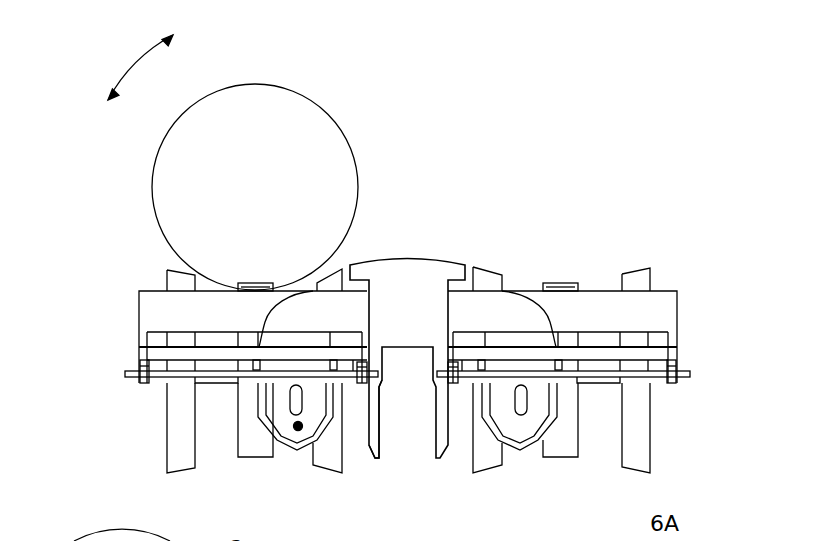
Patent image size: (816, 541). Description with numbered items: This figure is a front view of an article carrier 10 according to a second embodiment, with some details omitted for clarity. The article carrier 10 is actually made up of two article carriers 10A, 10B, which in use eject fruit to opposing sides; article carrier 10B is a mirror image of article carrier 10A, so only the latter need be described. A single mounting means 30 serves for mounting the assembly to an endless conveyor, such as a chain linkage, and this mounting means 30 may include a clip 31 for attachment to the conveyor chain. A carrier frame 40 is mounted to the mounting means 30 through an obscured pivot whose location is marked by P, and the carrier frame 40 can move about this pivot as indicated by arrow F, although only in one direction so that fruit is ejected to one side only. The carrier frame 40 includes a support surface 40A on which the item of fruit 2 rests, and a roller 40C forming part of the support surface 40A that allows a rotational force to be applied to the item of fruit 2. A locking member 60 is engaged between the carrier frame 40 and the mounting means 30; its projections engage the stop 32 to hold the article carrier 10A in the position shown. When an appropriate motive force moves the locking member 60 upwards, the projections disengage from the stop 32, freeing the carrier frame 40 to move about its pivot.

The item of fruit 2 is at (337, 130).
The article carrier 10 is at (592, 137).
The article carrier 10A is at (118, 205).
The article carrier 10B is at (662, 213).
The mounting means 30 is at (421, 389).
The clip 31 is at (380, 457).
The stop 32 is at (258, 418).
The carrier frame 40 is at (132, 289).
The support surface 40A is at (238, 290).
The roller 40C is at (177, 410).
The locking member 60 is at (157, 354).
The pivot location P is at (300, 430).
The arrow indicating pivoting direction F is at (140, 67).